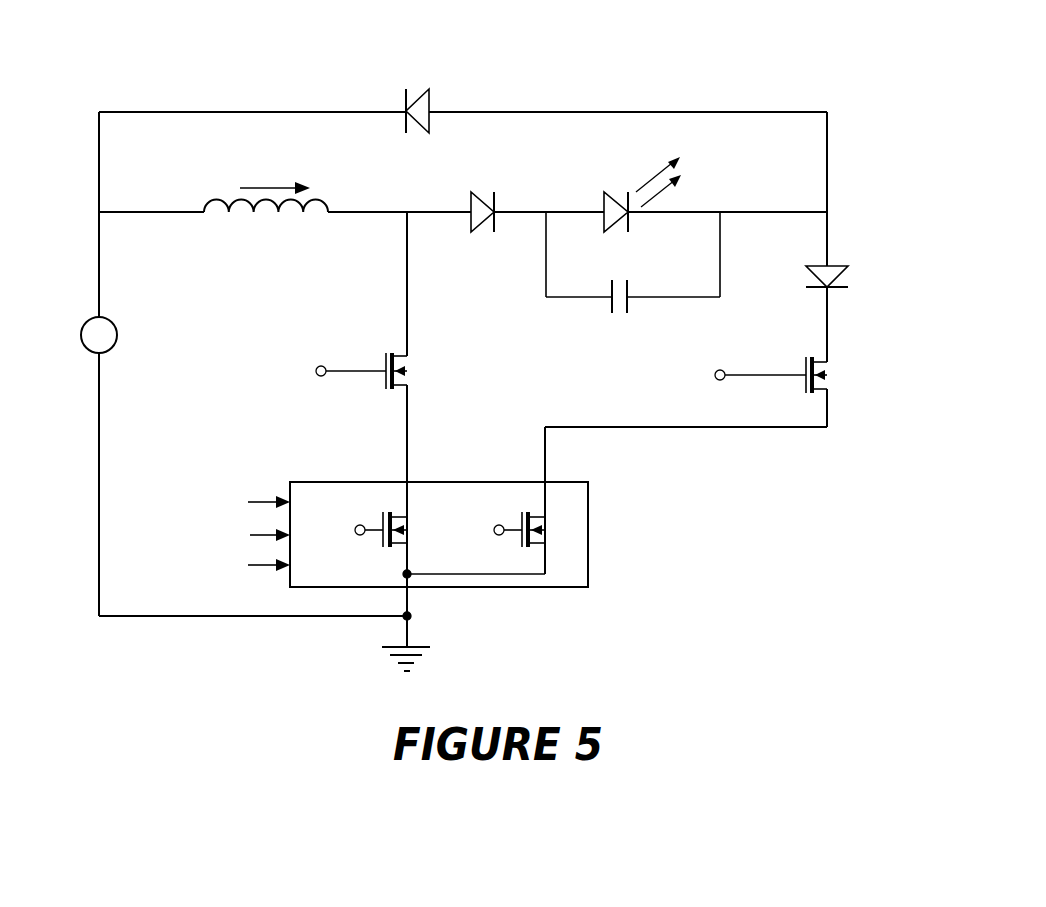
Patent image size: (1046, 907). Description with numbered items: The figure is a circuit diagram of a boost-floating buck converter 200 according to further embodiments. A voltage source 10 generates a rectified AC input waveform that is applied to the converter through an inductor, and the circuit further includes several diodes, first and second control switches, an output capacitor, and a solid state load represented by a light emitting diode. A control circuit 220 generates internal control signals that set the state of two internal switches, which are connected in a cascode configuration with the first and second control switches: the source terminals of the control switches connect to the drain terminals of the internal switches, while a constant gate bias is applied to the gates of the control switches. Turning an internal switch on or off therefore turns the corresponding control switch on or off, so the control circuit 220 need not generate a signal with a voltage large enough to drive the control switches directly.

The voltage source 10 is at (82, 330).
The boost-floating buck converter 200 is at (695, 78).
The control circuit 220 is at (588, 535).